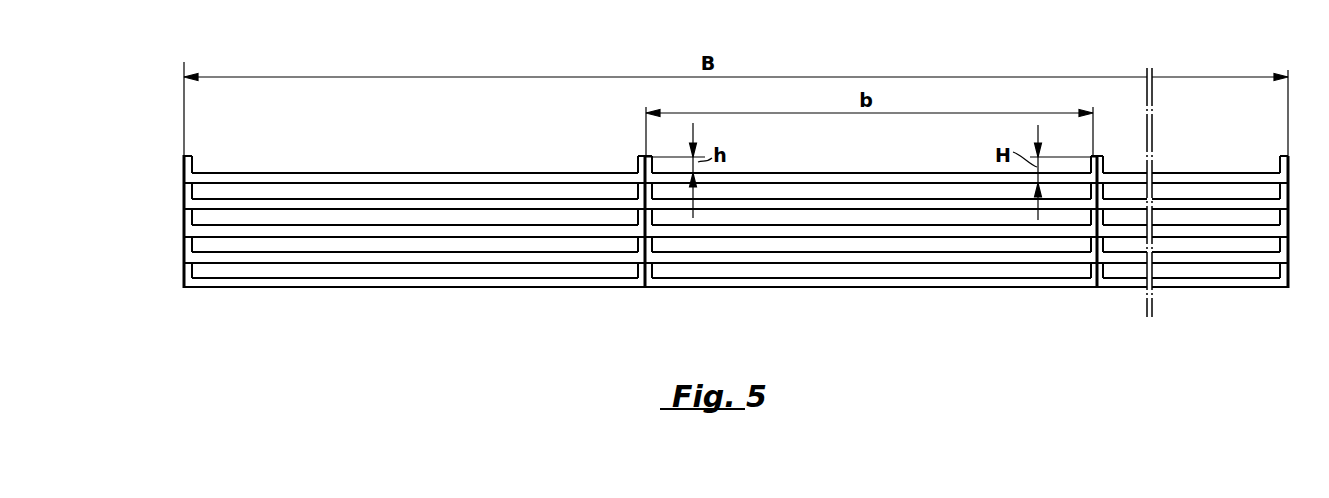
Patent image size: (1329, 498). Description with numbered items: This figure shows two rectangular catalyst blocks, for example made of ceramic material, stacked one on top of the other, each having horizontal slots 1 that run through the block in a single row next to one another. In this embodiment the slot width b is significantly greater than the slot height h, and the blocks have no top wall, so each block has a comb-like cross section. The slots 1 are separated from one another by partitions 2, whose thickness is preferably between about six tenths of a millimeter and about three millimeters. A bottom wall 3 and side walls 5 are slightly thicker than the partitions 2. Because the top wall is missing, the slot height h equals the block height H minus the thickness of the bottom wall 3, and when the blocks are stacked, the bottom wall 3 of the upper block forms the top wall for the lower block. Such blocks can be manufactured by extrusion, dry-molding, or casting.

The slots 1 is at (366, 217).
The partitions 2 is at (634, 195).
The bottom wall 3 is at (460, 174).
The side walls 5 is at (183, 193).